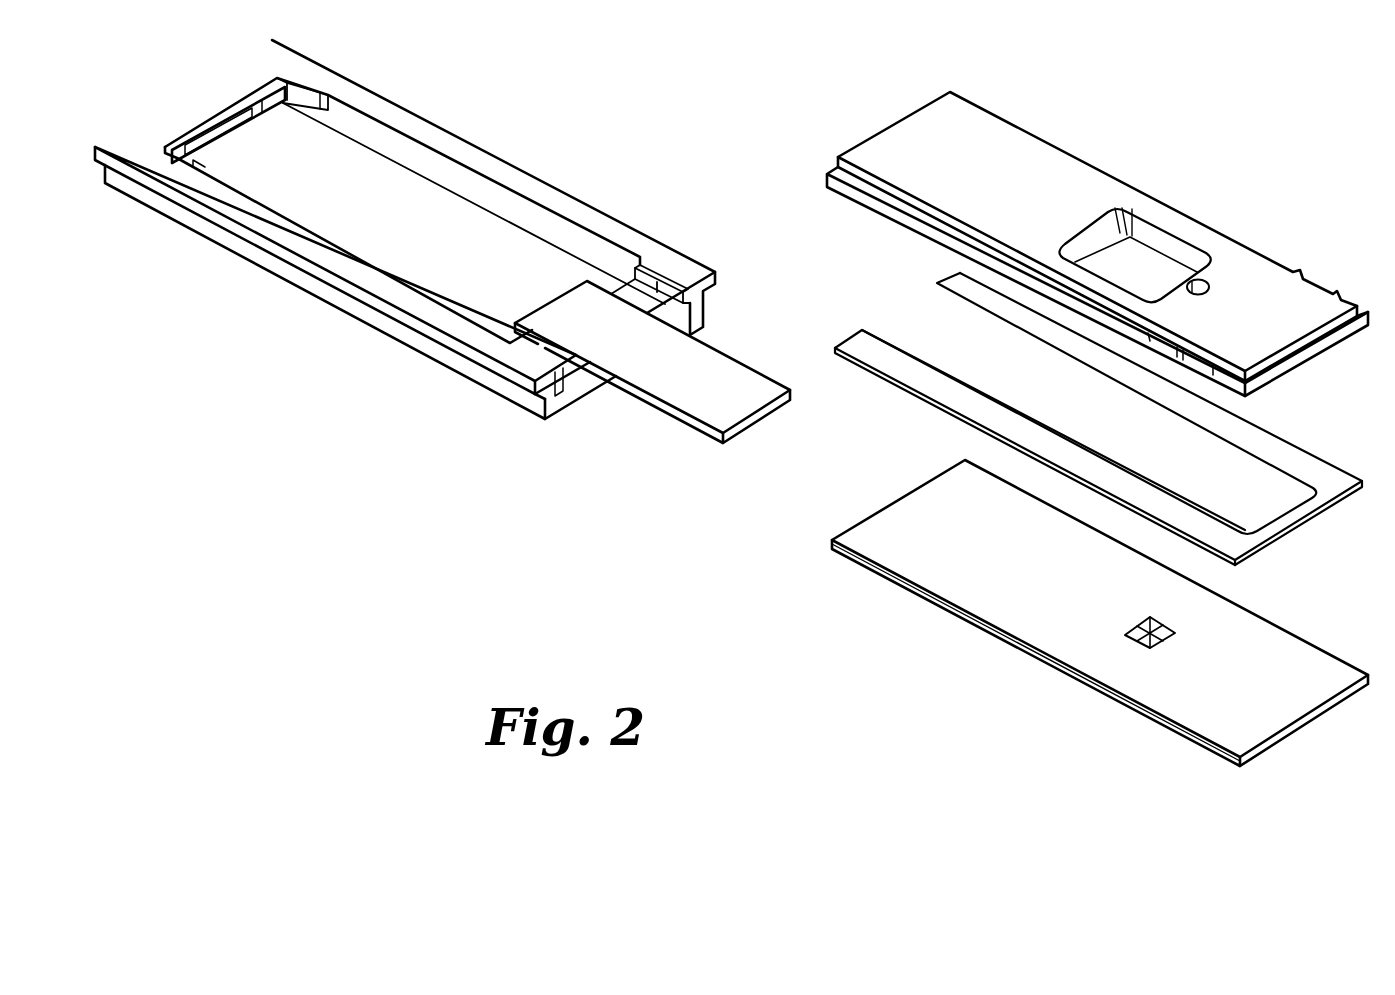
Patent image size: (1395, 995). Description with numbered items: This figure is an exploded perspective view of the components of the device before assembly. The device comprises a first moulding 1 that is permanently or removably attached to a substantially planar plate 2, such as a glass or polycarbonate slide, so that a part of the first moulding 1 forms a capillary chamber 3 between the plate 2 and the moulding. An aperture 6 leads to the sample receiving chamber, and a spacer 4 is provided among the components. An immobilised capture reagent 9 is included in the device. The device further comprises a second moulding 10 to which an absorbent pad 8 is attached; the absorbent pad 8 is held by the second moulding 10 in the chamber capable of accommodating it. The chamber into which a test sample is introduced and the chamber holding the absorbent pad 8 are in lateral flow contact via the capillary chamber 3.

The first moulding 1 is at (985, 122).
The substantially planar plate 2 is at (902, 570).
The capillary chamber 3 is at (1137, 257).
The spacer 4 is at (913, 378).
The aperture 6 is at (1204, 283).
The absorbent pad 8 is at (672, 390).
The immobilised capture reagent 9 is at (1142, 647).
The second moulding 10 is at (373, 102).